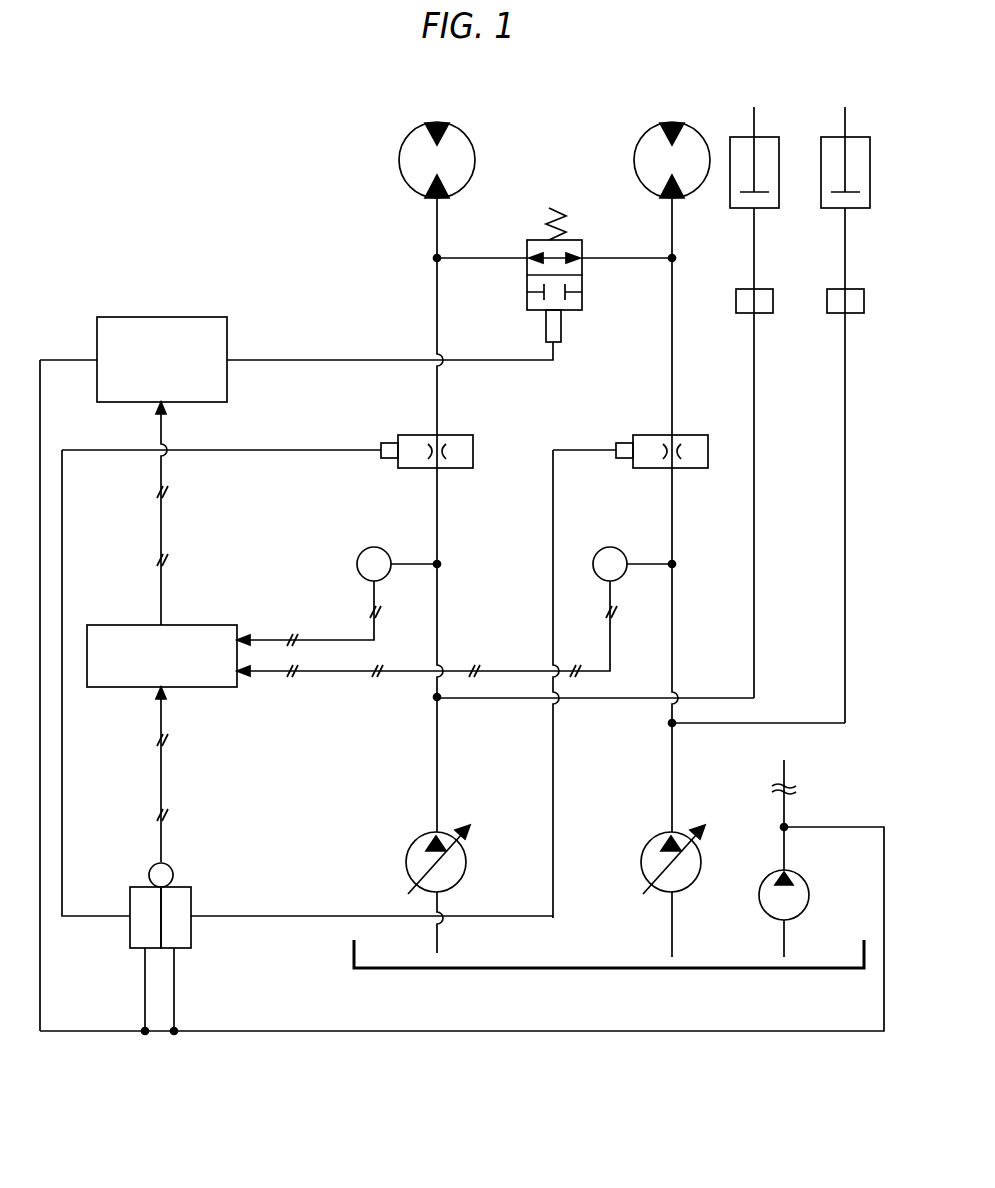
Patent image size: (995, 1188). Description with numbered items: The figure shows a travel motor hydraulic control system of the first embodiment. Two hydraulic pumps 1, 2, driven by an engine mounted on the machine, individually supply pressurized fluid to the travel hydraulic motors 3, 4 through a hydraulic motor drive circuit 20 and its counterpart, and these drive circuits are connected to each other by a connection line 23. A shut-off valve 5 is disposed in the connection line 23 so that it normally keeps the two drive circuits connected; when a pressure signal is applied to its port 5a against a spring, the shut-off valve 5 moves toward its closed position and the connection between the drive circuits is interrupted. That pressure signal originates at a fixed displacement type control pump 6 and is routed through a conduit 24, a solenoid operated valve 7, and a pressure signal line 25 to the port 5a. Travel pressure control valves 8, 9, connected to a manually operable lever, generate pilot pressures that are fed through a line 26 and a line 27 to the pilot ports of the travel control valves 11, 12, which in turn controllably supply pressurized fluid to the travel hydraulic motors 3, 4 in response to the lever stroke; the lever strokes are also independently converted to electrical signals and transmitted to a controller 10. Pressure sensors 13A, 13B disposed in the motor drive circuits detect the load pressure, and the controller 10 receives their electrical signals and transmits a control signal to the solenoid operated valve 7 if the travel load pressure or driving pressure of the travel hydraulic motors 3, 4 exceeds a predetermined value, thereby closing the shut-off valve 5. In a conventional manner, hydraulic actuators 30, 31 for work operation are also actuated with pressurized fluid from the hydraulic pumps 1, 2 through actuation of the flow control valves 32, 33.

The hydraulic pump 1 is at (406, 862).
The hydraulic pump 2 is at (641, 862).
The travel hydraulic motor 3 is at (398, 160).
The travel hydraulic motor 4 is at (633, 160).
The shut-off valve 5 is at (576, 240).
The port 5a is at (561, 322).
The fixed displacement type control pump 6 is at (809, 895).
The solenoid operated valve 7 is at (160, 317).
The travel pressure control valve 8 is at (140, 887).
The travel pressure control valve 9 is at (181, 887).
The controller 10 is at (188, 625).
The travel control valve 11 is at (455, 435).
The travel control valve 12 is at (690, 435).
The pressure sensor 13A is at (398, 528).
The pressure sensor 13B is at (632, 528).
The hydraulic motor drive circuit 20 is at (440, 508).
The connection line 23 is at (470, 258).
The conduit 24 is at (570, 1031).
The pressure signal line 25 is at (286, 360).
The line 26 is at (286, 450).
The line 27 is at (553, 802).
The hydraulic actuator 30 is at (766, 137).
The hydraulic actuator 31 is at (856, 137).
The flow control valve 32 is at (764, 289).
The flow control valve 33 is at (873, 269).